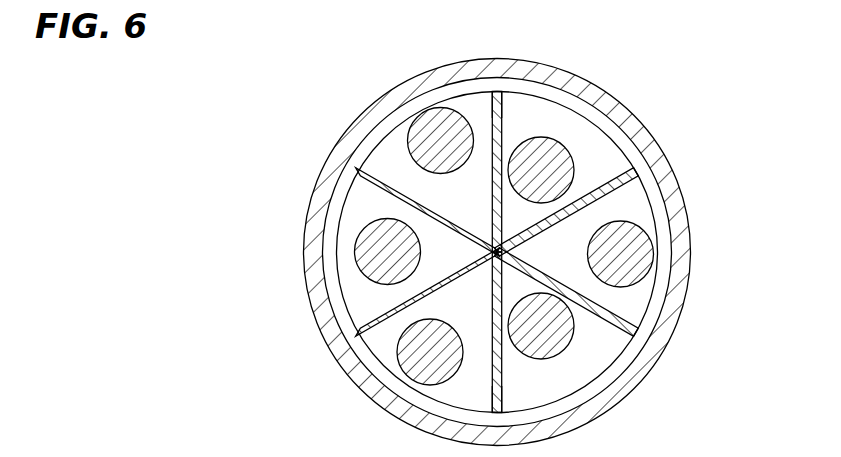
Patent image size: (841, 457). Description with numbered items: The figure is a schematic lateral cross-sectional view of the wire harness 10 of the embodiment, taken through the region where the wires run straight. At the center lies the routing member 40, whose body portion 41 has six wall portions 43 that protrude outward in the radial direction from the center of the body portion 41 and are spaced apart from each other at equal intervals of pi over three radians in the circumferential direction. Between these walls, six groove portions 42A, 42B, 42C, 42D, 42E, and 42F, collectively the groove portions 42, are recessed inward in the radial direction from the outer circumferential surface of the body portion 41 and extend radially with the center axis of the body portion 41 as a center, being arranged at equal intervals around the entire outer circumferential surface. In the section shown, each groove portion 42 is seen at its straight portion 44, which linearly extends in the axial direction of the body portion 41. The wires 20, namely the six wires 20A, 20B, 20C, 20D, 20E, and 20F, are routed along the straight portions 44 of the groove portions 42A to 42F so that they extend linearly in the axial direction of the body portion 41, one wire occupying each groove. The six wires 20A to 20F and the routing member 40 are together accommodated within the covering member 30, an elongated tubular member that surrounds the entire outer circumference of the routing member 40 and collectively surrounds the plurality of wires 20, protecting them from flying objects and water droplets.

The wire harness 10 is at (763, 88).
The wires 20 is at (493, 256).
The wire 20A is at (553, 154).
The wire 20B is at (638, 252).
The wire 20C is at (555, 345).
The wire 20D is at (415, 367).
The wire 20E is at (362, 256).
The wire 20F is at (453, 160).
The covering member 30 is at (583, 88).
The routing member 40 is at (511, 256).
The body portion 41 is at (357, 168).
The groove portions 42 is at (511, 256).
The groove portion 42A is at (614, 179).
The groove portion 42B is at (623, 318).
The groove portion 42C is at (502, 410).
The groove portion 42D is at (363, 331).
The groove portion 42E is at (372, 189).
The groove portion 42F is at (491, 106).
The wall portions 43 is at (492, 388).
The straight portion 44 is at (504, 122).